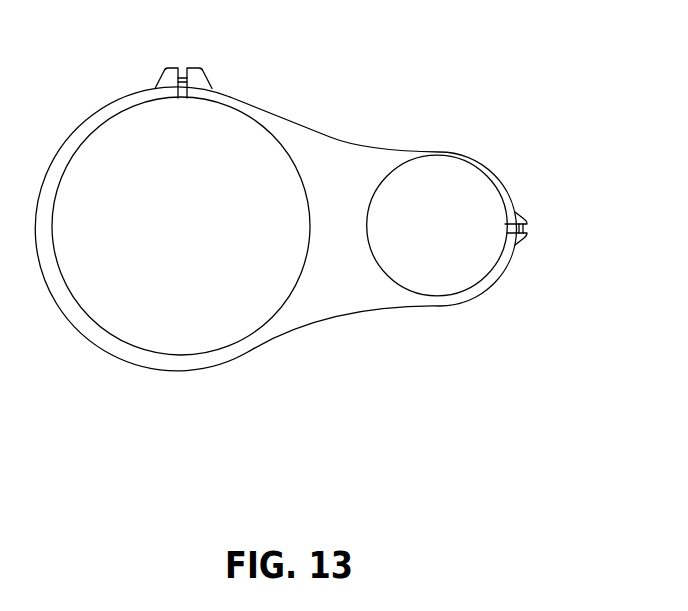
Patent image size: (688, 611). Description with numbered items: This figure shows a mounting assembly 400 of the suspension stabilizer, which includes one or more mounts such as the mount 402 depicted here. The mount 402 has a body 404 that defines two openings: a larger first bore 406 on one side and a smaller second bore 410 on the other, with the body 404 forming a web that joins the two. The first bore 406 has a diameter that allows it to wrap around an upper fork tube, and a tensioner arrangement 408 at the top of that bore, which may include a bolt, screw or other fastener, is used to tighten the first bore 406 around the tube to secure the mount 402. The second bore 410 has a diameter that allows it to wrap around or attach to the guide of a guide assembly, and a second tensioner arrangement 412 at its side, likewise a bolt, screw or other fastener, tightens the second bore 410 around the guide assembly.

The mounting assembly 400 is at (366, 82).
The mount 402 is at (240, 90).
The body 404 is at (353, 292).
The first bore 406 is at (178, 353).
The tensioner arrangement 408 is at (140, 67).
The second bore 410 is at (460, 289).
The tensioner arrangement 412 is at (537, 189).